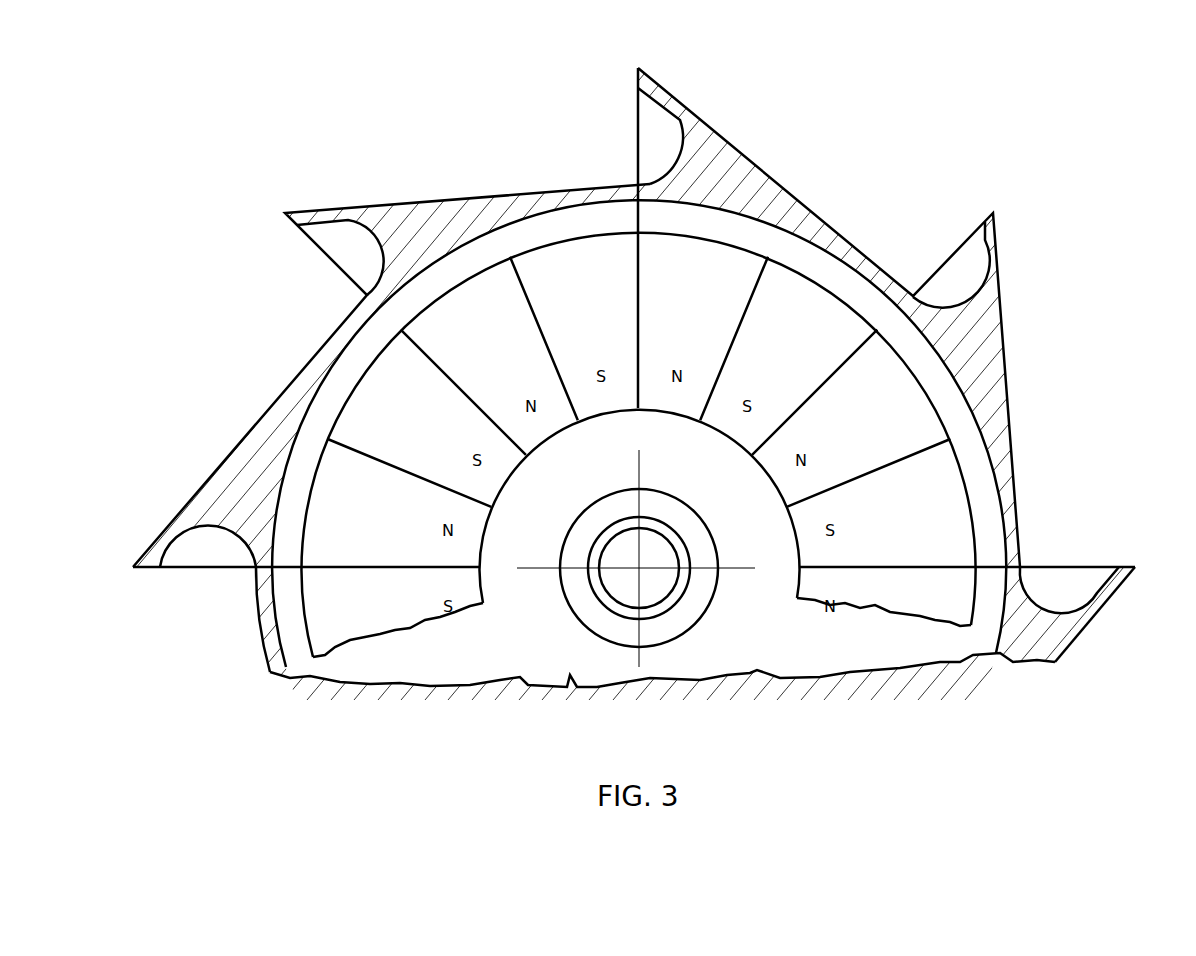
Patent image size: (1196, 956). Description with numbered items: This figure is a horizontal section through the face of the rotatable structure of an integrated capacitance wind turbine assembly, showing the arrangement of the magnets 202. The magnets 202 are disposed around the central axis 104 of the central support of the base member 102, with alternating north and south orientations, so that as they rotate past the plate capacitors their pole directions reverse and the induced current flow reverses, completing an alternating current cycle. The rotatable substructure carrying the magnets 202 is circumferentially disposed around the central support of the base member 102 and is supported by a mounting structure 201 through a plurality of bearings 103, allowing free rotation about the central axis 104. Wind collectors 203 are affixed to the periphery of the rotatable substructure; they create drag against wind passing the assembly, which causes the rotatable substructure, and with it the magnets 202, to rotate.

The mounting structure 201 is at (300, 680).
The magnets 202 is at (312, 487).
The wind collectors 203 is at (210, 568).
The base member 102 is at (673, 610).
The bearings 103 is at (705, 605).
The central axis 104 is at (639, 568).